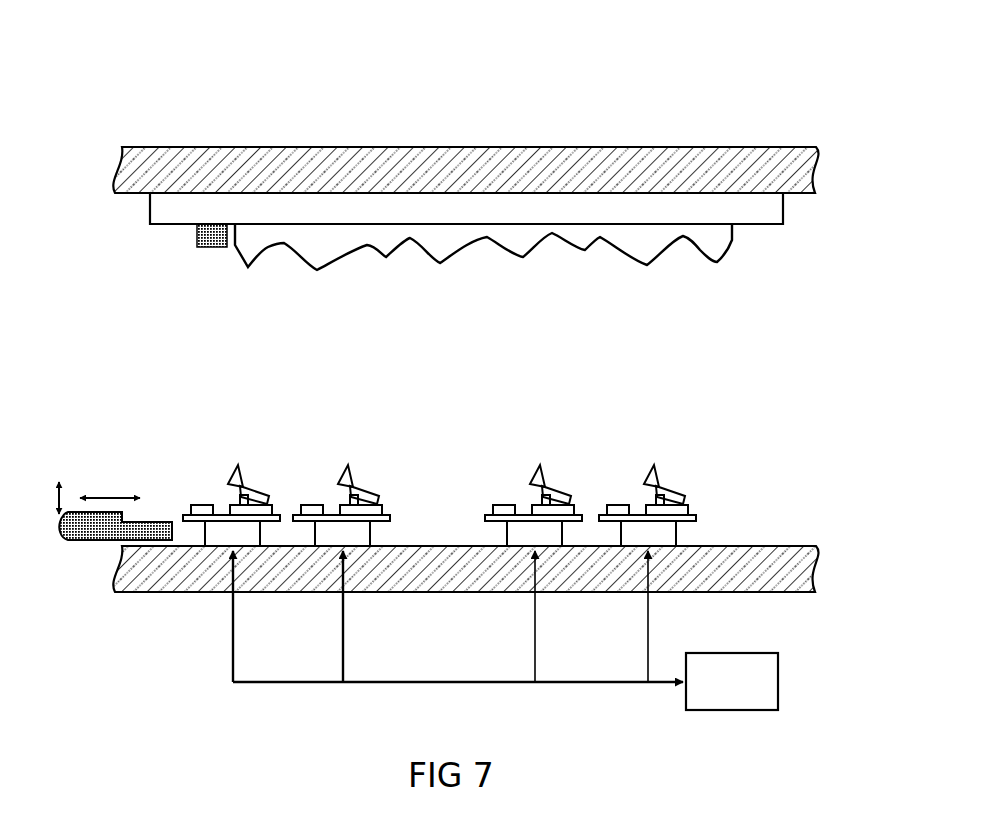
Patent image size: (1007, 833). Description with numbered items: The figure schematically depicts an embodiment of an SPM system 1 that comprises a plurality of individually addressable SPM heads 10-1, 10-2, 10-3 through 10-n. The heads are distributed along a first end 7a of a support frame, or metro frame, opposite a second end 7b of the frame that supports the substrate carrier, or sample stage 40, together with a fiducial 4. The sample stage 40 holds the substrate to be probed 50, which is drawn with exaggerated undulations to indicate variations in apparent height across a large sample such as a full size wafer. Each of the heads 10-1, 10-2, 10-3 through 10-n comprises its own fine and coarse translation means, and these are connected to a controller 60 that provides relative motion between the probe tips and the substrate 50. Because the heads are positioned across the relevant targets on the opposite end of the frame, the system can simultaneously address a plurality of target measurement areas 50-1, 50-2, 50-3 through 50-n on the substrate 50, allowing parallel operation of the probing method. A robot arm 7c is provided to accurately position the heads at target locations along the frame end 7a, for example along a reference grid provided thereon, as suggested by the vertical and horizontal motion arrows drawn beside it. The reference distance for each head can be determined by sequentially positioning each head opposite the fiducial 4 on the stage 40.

The SPM system 1 is at (106, 96).
The second end of the support frame 7b is at (496, 170).
The first end of the support frame 7a is at (496, 569).
The robot arm 7c is at (79, 555).
The sample stage 40 is at (466, 209).
The fiducial 4 is at (197, 245).
The substrate to be probed 50 is at (483, 247).
The target measurement area 50-1 is at (254, 280).
The target measurement area 50-2 is at (362, 261).
The target measurement area 50-3 is at (509, 266).
The target measurement area 50-n is at (680, 265).
The SPM head 10-1 is at (275, 449).
The SPM head 10-2 is at (367, 449).
The SPM head 10-3 is at (531, 442).
The SPM head 10-n is at (628, 442).
The controller 60 is at (505, 630).